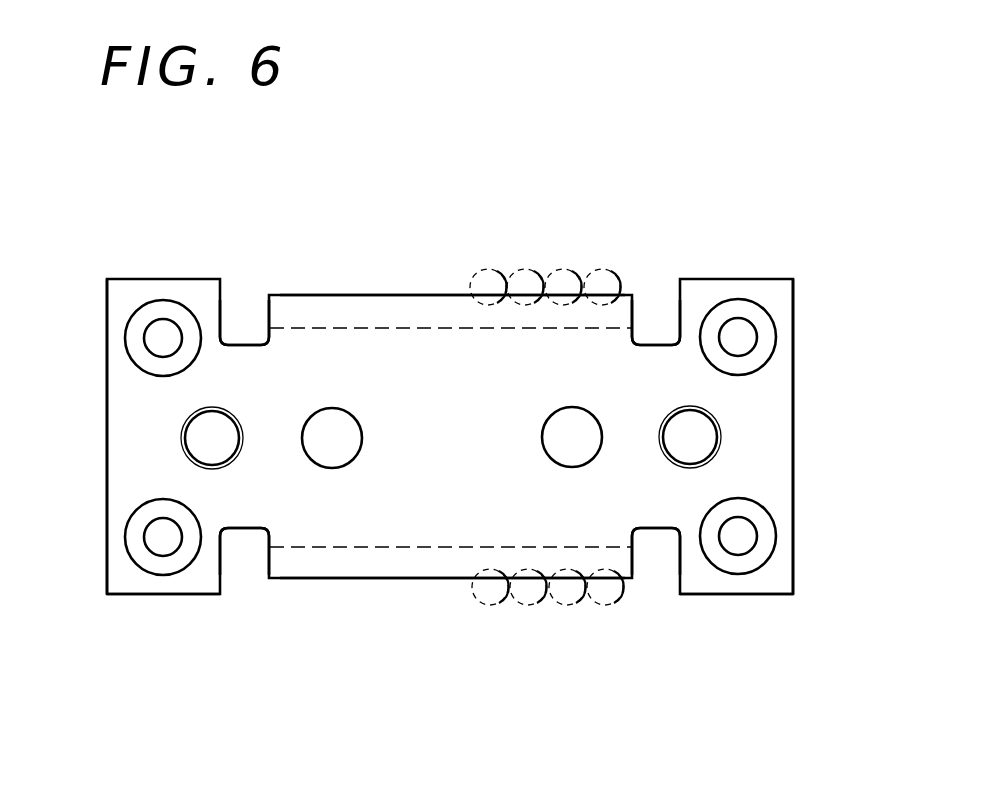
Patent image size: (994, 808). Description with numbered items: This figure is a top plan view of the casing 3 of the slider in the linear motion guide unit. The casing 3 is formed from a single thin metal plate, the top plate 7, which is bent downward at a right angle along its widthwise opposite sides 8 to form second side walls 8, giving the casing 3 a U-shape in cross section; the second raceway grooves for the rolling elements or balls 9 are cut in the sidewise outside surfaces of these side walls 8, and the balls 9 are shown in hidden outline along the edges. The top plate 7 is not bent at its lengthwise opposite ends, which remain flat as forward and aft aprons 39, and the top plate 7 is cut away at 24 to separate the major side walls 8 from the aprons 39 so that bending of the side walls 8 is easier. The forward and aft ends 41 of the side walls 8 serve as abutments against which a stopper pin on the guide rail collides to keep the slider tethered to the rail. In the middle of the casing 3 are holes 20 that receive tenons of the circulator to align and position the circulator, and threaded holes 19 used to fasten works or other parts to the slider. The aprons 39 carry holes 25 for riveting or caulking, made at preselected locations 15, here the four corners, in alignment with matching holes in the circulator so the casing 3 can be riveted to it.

The casing 3 is at (630, 254).
The top plate 7 is at (450, 385).
The second side walls 8 is at (334, 320).
The rolling elements or balls 9 is at (568, 275).
The preselected locations 15 is at (133, 578).
The threaded holes 19 is at (200, 442).
The holes 20 is at (590, 432).
The cut-away 24 is at (246, 335).
The holes for riveting 25 is at (158, 312).
The forward and aft aprons 39 is at (123, 468).
The forward and aft ends of the side walls 41 is at (268, 562).